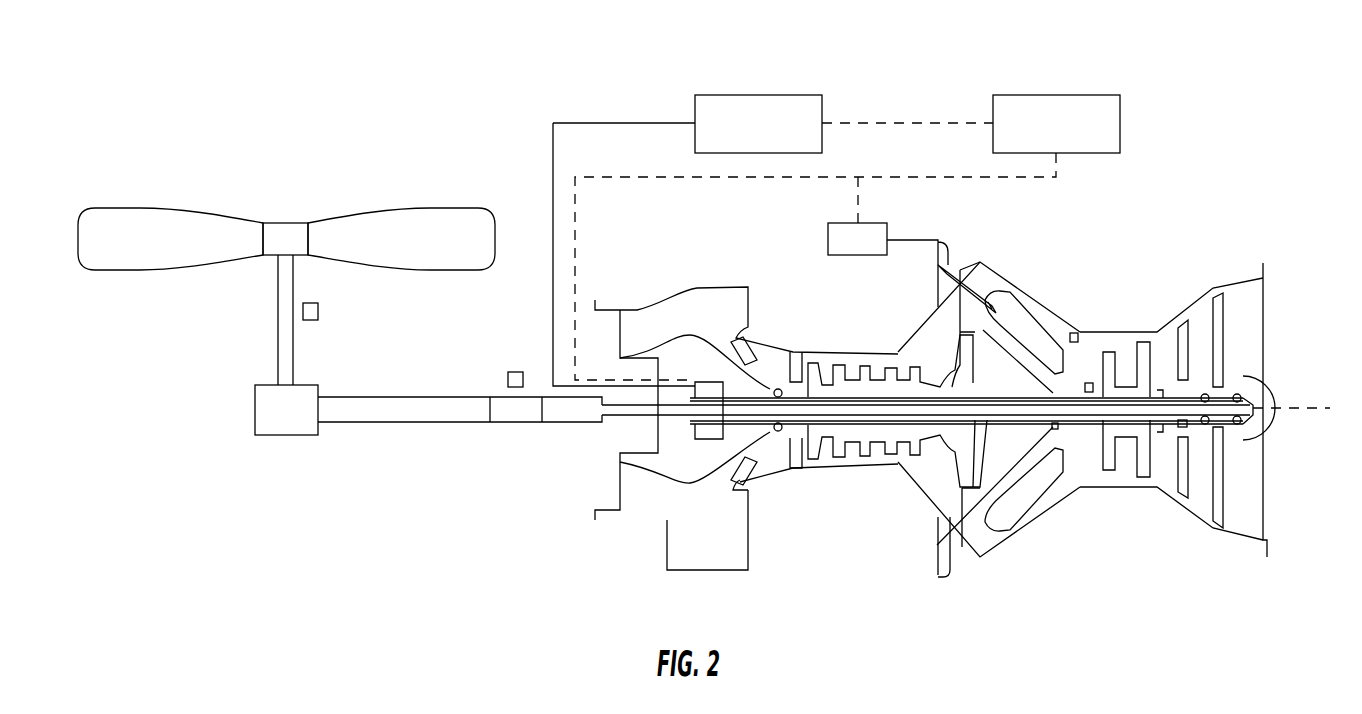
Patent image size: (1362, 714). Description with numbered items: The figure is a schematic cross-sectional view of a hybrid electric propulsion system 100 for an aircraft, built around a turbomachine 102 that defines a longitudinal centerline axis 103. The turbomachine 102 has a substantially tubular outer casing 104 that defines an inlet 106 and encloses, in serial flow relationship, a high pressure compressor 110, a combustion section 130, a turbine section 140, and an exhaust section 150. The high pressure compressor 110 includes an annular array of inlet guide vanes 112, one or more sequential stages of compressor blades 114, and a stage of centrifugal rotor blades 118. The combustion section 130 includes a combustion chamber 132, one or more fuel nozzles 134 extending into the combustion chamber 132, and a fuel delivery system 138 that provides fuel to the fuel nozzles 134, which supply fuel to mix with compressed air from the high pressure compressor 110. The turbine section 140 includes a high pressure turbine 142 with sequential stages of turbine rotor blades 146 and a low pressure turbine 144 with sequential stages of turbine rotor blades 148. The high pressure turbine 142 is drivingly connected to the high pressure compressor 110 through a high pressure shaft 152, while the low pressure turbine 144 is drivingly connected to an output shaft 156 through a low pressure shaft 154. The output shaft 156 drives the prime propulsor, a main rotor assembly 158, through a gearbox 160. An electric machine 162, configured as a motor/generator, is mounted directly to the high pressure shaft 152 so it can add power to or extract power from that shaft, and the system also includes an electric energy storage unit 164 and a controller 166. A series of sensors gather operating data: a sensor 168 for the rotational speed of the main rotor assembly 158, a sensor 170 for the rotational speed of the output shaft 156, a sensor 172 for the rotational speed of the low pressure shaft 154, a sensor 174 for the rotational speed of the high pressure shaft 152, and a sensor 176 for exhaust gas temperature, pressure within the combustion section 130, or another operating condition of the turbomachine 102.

The hybrid electric propulsion system 100 is at (594, 58).
The turbomachine 102 is at (949, 418).
The centerline axis 103 is at (1300, 392).
The outer casing 104 is at (823, 470).
The inlet 106 is at (669, 300).
The high pressure compressor 110 is at (874, 421).
The inlet guide vanes 112 is at (788, 456).
The compressor blades 114 is at (865, 470).
The centrifugal rotor blades 118 is at (960, 347).
The combustion section 130 is at (1018, 418).
The combustion chamber 132 is at (1040, 492).
The fuel nozzles 134 is at (975, 268).
The fuel delivery system 138 is at (900, 222).
The turbine section 140 is at (1171, 383).
The high pressure turbine 142 is at (1120, 325).
The low pressure turbine 144 is at (1260, 412).
The turbine rotor blades 146 is at (1140, 480).
The turbine rotor blades 148 is at (1226, 308).
The exhaust section 150 is at (1272, 330).
The high pressure shaft 152 is at (1074, 333).
The low pressure shaft 154 is at (1098, 410).
The output shaft 156 is at (388, 396).
The main rotor assembly 158 is at (200, 350).
The gearbox 160 is at (301, 428).
The electric machine 162 is at (740, 450).
The electric energy storage unit 164 is at (773, 136).
The controller 166 is at (1071, 136).
The sensor 168 is at (318, 311).
The sensor 170 is at (507, 373).
The sensor 172 is at (1187, 425).
The sensor 174 is at (1089, 383).
The sensor 176 is at (1048, 330).